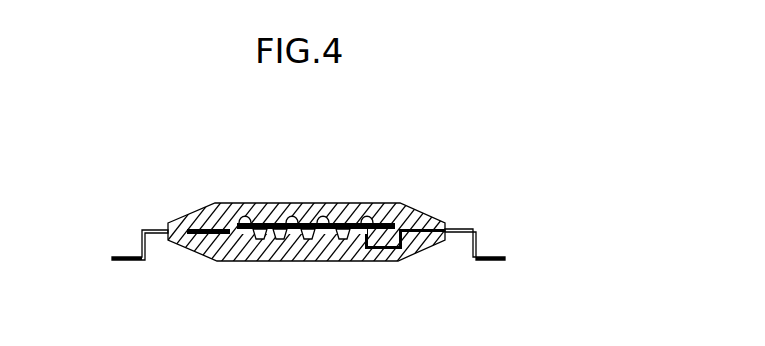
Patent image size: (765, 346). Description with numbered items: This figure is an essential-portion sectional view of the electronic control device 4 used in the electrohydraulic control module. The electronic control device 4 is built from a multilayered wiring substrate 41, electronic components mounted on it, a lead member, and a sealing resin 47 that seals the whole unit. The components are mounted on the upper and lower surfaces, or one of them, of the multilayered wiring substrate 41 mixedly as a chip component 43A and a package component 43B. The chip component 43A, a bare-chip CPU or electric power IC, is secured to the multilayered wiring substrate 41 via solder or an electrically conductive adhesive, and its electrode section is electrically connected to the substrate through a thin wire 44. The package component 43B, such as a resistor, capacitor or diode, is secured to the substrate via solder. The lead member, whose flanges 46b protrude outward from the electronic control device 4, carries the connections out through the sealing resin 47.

The electronic control device 4 is at (203, 162).
The multilayered wiring substrate 41 is at (404, 206).
The chip component 43A is at (279, 210).
The package component 43B is at (303, 236).
The thin wire 44 is at (306, 216).
The flange 46b is at (142, 230).
The sealing resin 47 is at (191, 210).